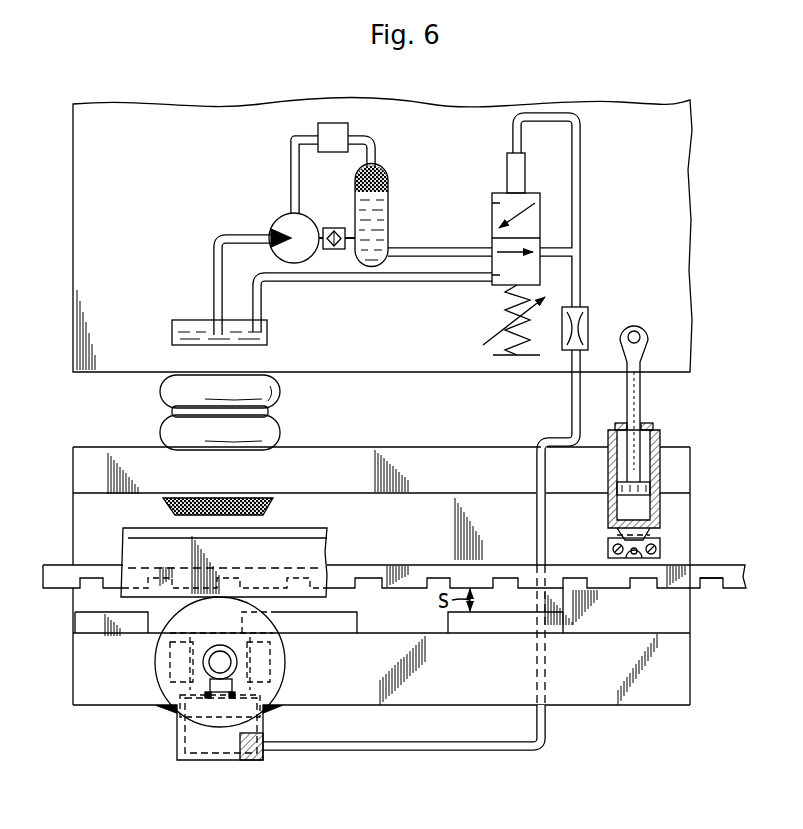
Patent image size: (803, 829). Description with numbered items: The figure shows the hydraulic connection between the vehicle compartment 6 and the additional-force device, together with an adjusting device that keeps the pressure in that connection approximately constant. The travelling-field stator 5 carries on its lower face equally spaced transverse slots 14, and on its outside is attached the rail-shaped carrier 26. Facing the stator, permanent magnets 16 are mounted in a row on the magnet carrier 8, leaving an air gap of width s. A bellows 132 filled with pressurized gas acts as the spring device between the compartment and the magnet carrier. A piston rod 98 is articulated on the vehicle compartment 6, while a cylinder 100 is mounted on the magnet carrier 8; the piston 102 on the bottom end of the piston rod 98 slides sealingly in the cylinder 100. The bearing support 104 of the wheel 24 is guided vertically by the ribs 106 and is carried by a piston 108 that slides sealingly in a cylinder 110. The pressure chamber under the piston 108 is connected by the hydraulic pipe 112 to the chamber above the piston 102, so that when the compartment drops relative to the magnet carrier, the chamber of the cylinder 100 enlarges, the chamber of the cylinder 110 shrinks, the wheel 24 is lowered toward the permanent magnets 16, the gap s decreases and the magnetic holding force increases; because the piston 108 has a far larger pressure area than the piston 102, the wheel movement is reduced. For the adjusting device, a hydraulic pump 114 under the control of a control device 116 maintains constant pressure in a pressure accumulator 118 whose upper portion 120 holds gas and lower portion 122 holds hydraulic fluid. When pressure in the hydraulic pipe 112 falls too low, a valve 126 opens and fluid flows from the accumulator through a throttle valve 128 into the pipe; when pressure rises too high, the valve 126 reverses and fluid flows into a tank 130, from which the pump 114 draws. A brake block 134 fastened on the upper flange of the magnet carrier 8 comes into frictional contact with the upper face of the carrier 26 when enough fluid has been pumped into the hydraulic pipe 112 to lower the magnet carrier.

The travelling-field stator 5 is at (394, 575).
The vehicle compartment 6 is at (382, 235).
The magnet carrier 8 is at (381, 576).
The slots 14 is at (712, 590).
The permanent magnets 16 is at (342, 632).
The wheel 24 is at (223, 670).
The carrier 26 is at (330, 553).
The piston rod 98 is at (642, 400).
The cylinder 100 is at (625, 509).
The piston 102 is at (646, 442).
The bearing support 104 is at (174, 668).
The ribs 106 is at (190, 659).
The piston 108 is at (224, 725).
The cylinder 110 is at (219, 748).
The hydraulic pipe 112 is at (549, 746).
The hydraulic pump 114 is at (288, 220).
The control device 116 is at (338, 128).
The pressure accumulator 118 is at (402, 201).
The upper portion 120 is at (383, 168).
The lower portion 122 is at (388, 236).
The valve 126 is at (491, 203).
The throttle valve 128 is at (592, 326).
The tank 130 is at (186, 320).
The bellows 132 is at (283, 417).
The brake block 134 is at (265, 508).